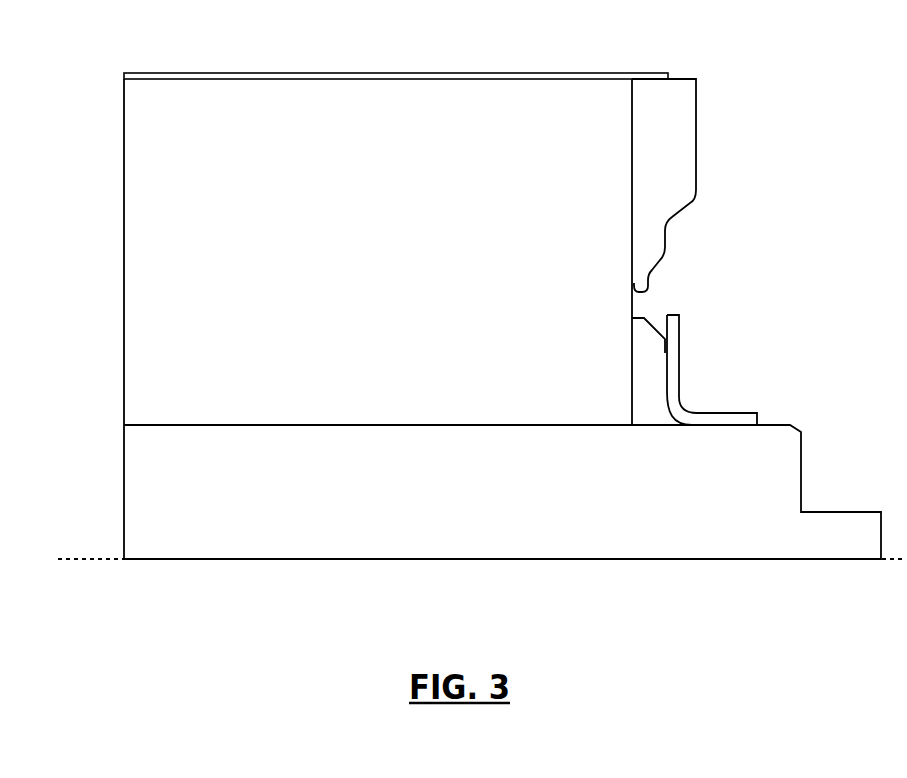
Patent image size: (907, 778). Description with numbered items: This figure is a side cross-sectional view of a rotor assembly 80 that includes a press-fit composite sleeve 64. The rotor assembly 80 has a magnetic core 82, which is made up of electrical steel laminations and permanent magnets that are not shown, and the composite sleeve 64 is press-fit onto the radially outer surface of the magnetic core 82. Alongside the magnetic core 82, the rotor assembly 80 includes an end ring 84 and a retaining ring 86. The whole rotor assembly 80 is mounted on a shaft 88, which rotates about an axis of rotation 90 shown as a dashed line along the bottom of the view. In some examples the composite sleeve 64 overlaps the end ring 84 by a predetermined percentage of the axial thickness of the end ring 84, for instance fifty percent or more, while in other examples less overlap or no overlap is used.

The composite sleeve 64 is at (398, 73).
The rotor assembly 80 is at (822, 98).
The magnetic core 82 is at (140, 158).
The end ring 84 is at (674, 83).
The retaining ring 86 is at (682, 393).
The shaft 88 is at (140, 483).
The axis of rotation 90 is at (84, 556).